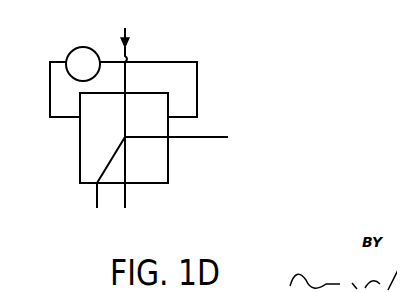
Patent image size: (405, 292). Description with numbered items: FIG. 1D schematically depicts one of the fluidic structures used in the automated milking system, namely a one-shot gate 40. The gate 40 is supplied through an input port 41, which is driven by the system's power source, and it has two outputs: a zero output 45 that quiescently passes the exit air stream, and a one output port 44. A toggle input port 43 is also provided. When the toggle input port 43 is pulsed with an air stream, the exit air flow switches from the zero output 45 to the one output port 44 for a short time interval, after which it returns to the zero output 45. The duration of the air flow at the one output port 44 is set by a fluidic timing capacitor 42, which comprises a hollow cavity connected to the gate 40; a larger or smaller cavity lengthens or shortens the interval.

The one-shot gate 40 is at (162, 164).
The input port 41 is at (119, 44).
The fluidic timing capacitor 42 is at (89, 39).
The toggle input port 43 is at (220, 129).
The "1" output port 44 is at (89, 200).
The "0" output 45 is at (117, 200).